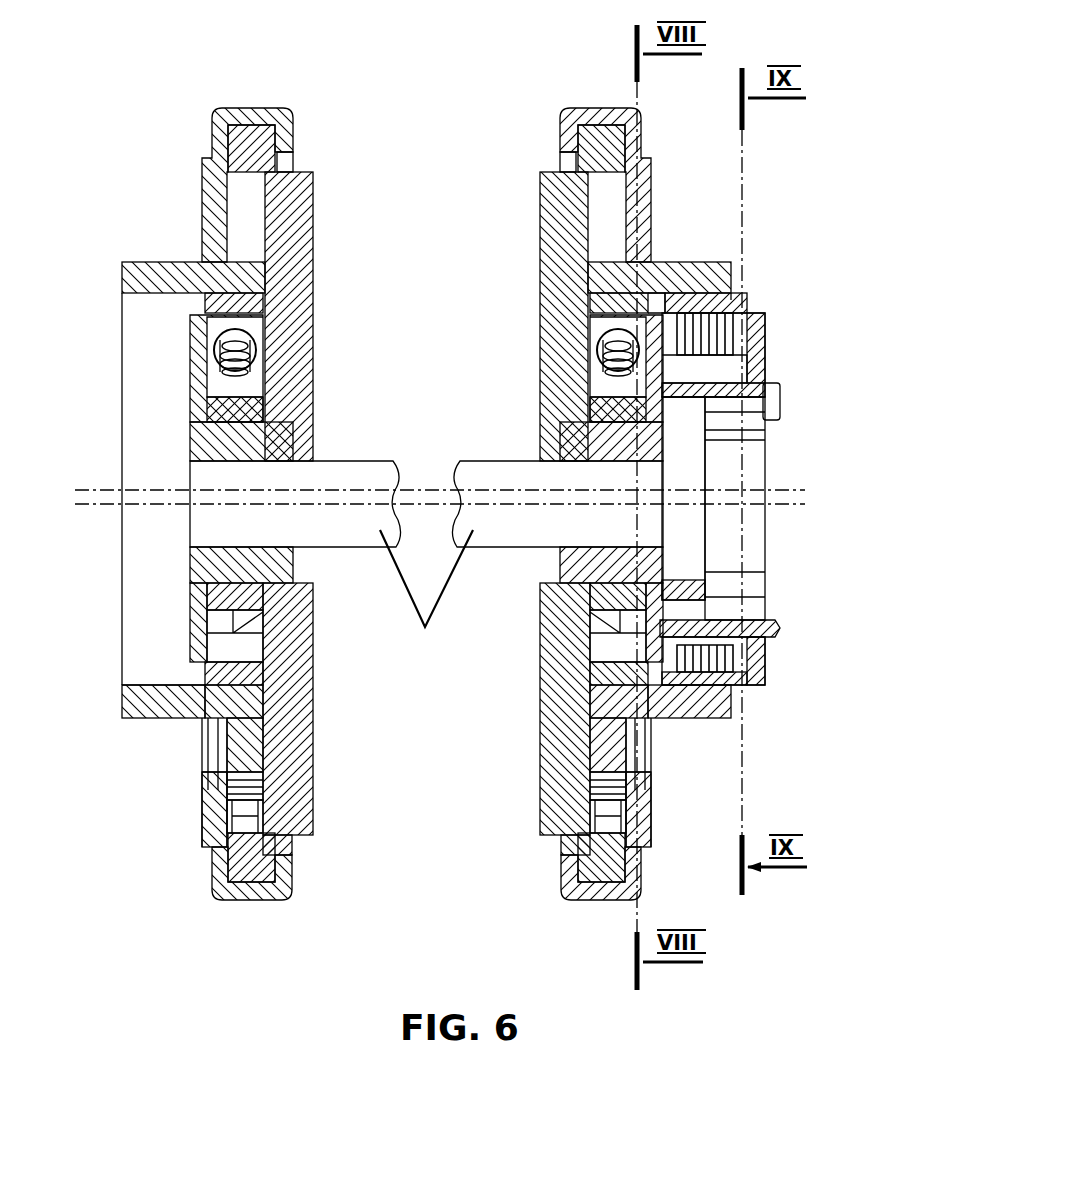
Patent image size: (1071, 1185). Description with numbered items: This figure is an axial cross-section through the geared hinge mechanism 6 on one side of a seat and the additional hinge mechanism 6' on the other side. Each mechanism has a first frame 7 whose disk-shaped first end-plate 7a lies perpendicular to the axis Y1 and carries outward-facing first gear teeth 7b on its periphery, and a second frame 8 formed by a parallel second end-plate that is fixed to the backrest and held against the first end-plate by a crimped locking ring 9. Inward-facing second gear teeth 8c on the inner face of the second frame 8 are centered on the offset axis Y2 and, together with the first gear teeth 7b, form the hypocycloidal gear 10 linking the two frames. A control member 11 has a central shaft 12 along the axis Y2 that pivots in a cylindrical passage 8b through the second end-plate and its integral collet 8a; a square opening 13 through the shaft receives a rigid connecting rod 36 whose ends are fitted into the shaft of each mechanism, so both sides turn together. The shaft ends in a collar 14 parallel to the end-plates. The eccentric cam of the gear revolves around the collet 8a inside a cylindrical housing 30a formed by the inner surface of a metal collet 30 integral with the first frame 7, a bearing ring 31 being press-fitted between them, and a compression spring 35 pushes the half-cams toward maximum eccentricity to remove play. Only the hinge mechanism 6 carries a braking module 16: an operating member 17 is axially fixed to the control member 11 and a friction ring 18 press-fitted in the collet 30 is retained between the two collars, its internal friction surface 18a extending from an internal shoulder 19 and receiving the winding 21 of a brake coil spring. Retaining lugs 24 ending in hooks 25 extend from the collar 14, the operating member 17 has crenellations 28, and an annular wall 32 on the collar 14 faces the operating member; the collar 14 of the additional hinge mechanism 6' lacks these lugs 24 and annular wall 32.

The hinge mechanism 6 is at (794, 144).
The additional hinge mechanism 6' is at (415, 144).
The first frame 7 is at (138, 730).
The first end-plate 7a is at (243, 757).
The first circular gear teeth 7b is at (233, 791).
The second frame 8 is at (320, 769).
The collet 8a is at (248, 600).
The cylindrical passage 8b is at (272, 418).
The second circular gear teeth 8c is at (242, 834).
The locking ring 9 is at (245, 897).
The hypocycloidal gear 10 is at (258, 824).
The control member 11 is at (185, 410).
The central shaft 12 is at (252, 565).
The opening 13 is at (268, 458).
The collar 14 is at (192, 348).
The braking module 16 is at (740, 288).
The operating member 17 is at (773, 359).
The friction ring 18 is at (746, 294).
The friction surface 18a is at (757, 321).
The internal shoulder 19 is at (666, 312).
The winding 21 is at (700, 662).
The retaining lugs 24 is at (748, 409).
The hook 25 is at (773, 401).
The crenellations 28 is at (763, 391).
The collet 30 is at (142, 705).
The cylindrical housing 30a is at (160, 685).
The ring 31 is at (237, 676).
The annular wall 32 is at (697, 589).
The spring 35 is at (246, 346).
The connecting rod 36 is at (426, 560).
The axis Y1 is at (810, 481).
The axis Y2 is at (808, 510).